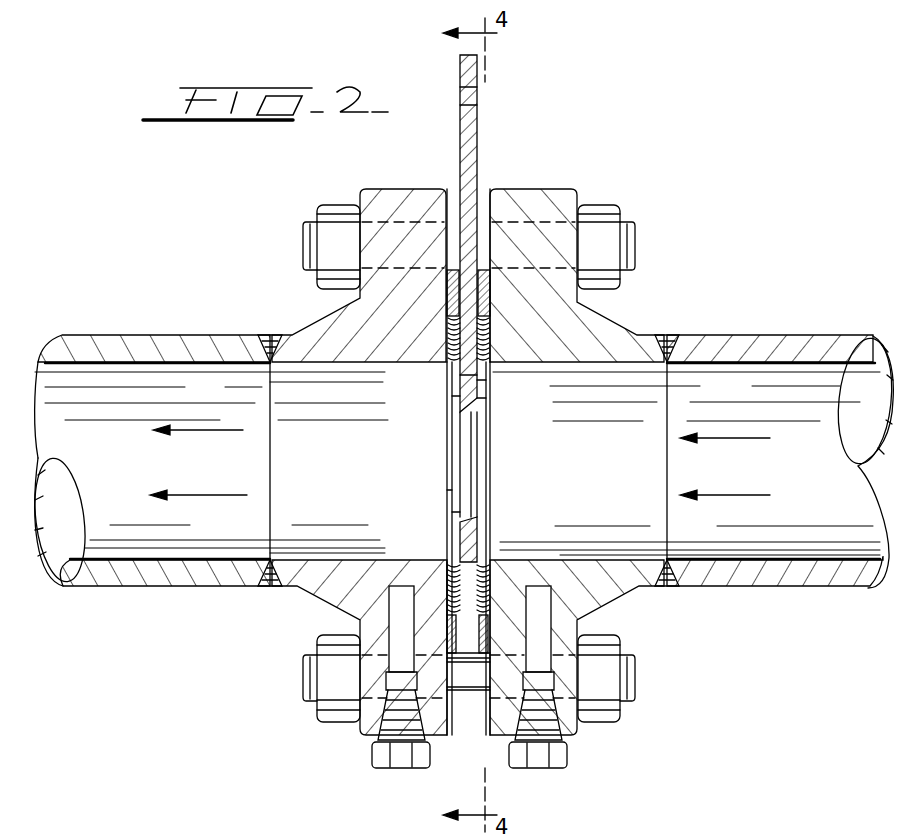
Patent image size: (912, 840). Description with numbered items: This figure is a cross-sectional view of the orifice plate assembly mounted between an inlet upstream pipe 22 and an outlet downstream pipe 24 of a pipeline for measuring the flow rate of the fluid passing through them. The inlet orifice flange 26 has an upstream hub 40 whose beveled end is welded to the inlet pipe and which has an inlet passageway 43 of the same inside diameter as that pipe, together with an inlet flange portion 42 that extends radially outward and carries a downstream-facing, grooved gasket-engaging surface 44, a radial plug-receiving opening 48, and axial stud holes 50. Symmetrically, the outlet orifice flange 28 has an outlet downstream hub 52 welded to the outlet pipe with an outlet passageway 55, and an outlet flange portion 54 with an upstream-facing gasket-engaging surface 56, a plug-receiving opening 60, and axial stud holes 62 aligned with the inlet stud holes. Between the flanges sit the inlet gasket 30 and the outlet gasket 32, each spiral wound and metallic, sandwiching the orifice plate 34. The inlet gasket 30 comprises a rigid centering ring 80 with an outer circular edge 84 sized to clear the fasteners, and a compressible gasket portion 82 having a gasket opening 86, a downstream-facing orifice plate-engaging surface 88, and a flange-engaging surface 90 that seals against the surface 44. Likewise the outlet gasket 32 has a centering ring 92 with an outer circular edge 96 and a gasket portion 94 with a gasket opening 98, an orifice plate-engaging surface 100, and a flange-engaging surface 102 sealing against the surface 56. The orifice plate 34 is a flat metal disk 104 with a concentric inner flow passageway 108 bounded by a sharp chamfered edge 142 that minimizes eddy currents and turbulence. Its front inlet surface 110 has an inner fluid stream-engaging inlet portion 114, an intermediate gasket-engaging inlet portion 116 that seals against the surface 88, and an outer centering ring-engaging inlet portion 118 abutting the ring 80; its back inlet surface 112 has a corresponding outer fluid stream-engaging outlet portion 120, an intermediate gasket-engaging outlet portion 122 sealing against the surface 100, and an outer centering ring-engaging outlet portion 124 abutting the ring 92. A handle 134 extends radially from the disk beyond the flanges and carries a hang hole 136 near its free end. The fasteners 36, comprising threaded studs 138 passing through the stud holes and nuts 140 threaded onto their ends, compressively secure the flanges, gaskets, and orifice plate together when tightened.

The inlet upstream pipe 22 is at (778, 336).
The outlet downstream pipe 24 is at (152, 335).
The inlet upstream orifice flange 26 is at (668, 405).
The outlet downstream orifice flange 28 is at (270, 392).
The inlet upstream spiral wound metallic gasket 30 is at (478, 540).
The outlet downstream spiral wound metallic gasket 32 is at (448, 456).
The orifice plate 34 is at (458, 512).
The fasteners 36 is at (640, 243).
The upstream hub 40 is at (640, 335).
The inlet upstream flange portion 42 is at (578, 195).
The inlet passageway 43 is at (668, 562).
The inlet upstream gasket-engaging surface 44 is at (479, 384).
The plug-receiving opening 48 is at (577, 735).
The inlet upstream axial stud holes 50 is at (532, 215).
The outlet downstream hub 52 is at (292, 332).
The outlet downstream flange portion 54 is at (362, 198).
The outlet passageway 55 is at (272, 560).
The outlet downstream gasket-engaging surface 56 is at (449, 352).
The plug-receiving opening 60 is at (372, 730).
The outlet downstream axial stud holes 62 is at (405, 223).
The inlet upstream centering ring 80 is at (490, 293).
The inlet upstream gasket portion 82 is at (468, 572).
The outer circular edge 84 is at (481, 268).
The inlet upstream gasket opening 86 is at (476, 572).
The inlet orifice plate-engaging surface 88 is at (479, 352).
The inlet upstream flange-engaging surface 90 is at (485, 602).
The outlet downstream centering ring 92 is at (447, 293).
The outlet downstream gasket portion 94 is at (455, 602).
The outer circular edge 96 is at (455, 268).
The outlet downstream gasket opening 98 is at (447, 490).
The outlet orifice plate-engaging surface 100 is at (452, 565).
The outlet downstream flange-engaging surface 102 is at (452, 590).
The disk 104 is at (460, 381).
The inner flow passageway 108 is at (480, 452).
The front inlet surface 110 is at (479, 405).
The back inlet surface 112 is at (455, 396).
The inner fluid stream-engaging inlet portion 114 is at (490, 520).
The intermediate gasket-engaging inlet portion 116 is at (490, 344).
The outer centering ring-engaging inlet portion 118 is at (487, 625).
The outer fluid stream-engaging outlet portion 120 is at (460, 530).
The intermediate gasket-engaging outlet portion 122 is at (449, 330).
The outer centering ring-engaging outlet portion 124 is at (452, 625).
The handle 134 is at (478, 100).
The hang hole 136 is at (460, 67).
The threaded studs 138 is at (641, 680).
The nuts 140 is at (600, 636).
The sharp chamfered edge 142 is at (462, 412).